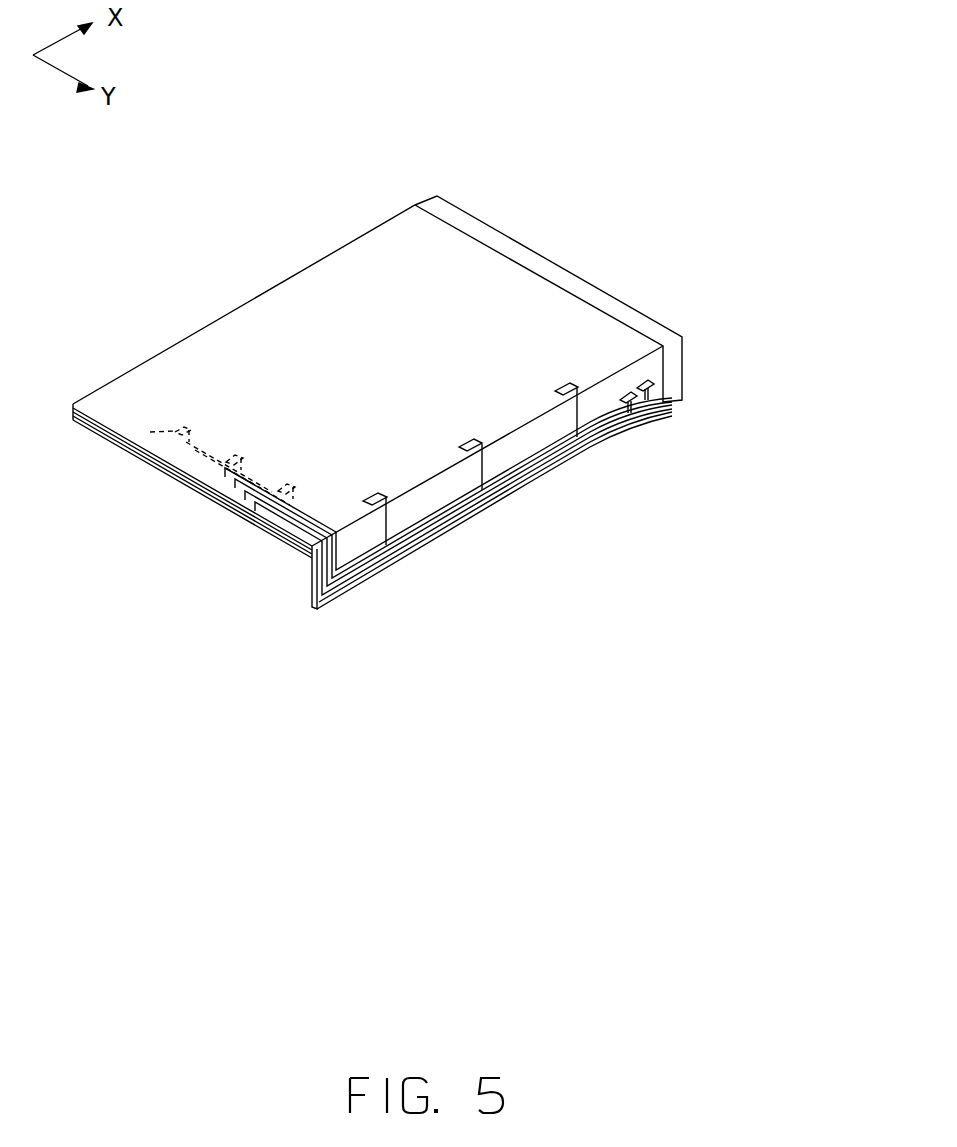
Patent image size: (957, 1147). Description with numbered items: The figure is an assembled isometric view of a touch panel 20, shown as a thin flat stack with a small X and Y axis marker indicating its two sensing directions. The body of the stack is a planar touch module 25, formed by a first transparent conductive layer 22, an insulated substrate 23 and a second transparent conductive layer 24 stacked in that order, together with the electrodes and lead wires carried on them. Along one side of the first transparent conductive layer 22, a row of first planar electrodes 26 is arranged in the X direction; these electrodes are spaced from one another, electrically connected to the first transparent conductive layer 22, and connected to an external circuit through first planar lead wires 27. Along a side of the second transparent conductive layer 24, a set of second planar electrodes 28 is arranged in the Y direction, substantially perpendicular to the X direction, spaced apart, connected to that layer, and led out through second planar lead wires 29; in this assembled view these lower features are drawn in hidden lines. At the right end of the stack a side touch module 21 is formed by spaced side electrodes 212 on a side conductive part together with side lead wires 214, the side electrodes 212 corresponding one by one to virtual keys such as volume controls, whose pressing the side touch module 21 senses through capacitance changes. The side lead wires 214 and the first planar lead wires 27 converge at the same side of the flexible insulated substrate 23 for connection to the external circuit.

The touch panel 20 is at (560, 166).
The side touch module 21 is at (818, 314).
The side electrodes 212 is at (651, 387).
The side lead wires 214 is at (648, 400).
The first transparent conductive layer 22 is at (630, 343).
The insulated substrate 23 is at (217, 500).
The second transparent conductive layer 24 is at (268, 527).
The planar touch module 25 is at (397, 716).
The first planar electrodes 26 is at (367, 502).
The first planar lead wires 27 is at (400, 540).
The second planar electrodes 28 is at (172, 430).
The second planar lead wires 29 is at (153, 448).